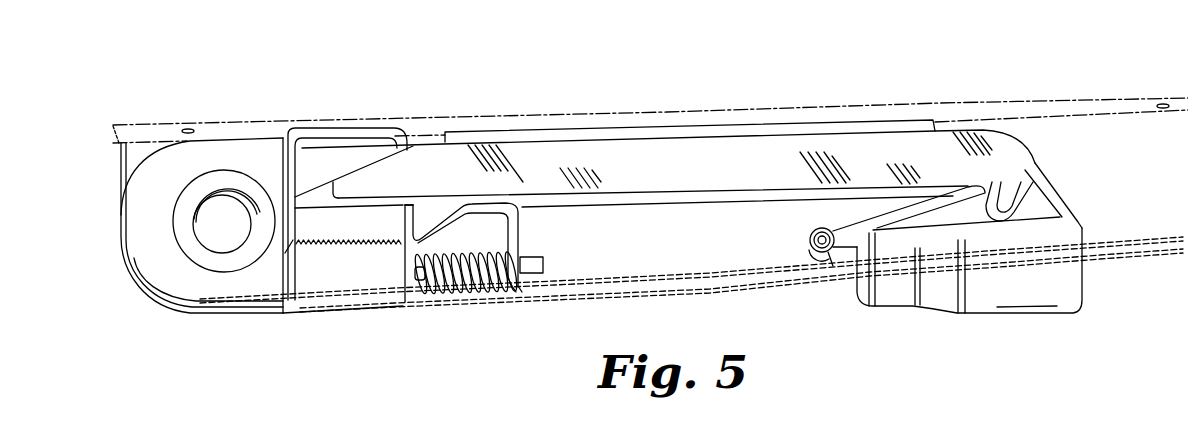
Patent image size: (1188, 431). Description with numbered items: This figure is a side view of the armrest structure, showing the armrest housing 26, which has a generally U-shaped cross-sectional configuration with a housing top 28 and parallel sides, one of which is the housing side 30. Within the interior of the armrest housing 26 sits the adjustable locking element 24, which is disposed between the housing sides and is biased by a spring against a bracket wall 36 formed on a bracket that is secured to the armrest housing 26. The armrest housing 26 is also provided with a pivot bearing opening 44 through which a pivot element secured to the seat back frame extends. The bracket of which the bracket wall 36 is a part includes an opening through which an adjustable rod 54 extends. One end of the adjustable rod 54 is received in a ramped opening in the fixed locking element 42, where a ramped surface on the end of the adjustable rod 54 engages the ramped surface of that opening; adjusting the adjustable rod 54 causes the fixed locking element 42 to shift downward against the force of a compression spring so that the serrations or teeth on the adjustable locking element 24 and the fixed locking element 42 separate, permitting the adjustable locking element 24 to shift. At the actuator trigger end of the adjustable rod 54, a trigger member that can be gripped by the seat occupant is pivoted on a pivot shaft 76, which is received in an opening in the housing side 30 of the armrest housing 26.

The adjustable locking element 24 is at (350, 270).
The armrest housing 26 is at (1050, 96).
The housing top 28 is at (667, 110).
The housing side 30 is at (683, 258).
The bracket wall 36 is at (298, 168).
The fixed locking element 42 is at (340, 166).
The pivot bearing opening 44 is at (206, 197).
The adjustable rod 54 is at (730, 162).
The pivot shaft 76 is at (825, 256).